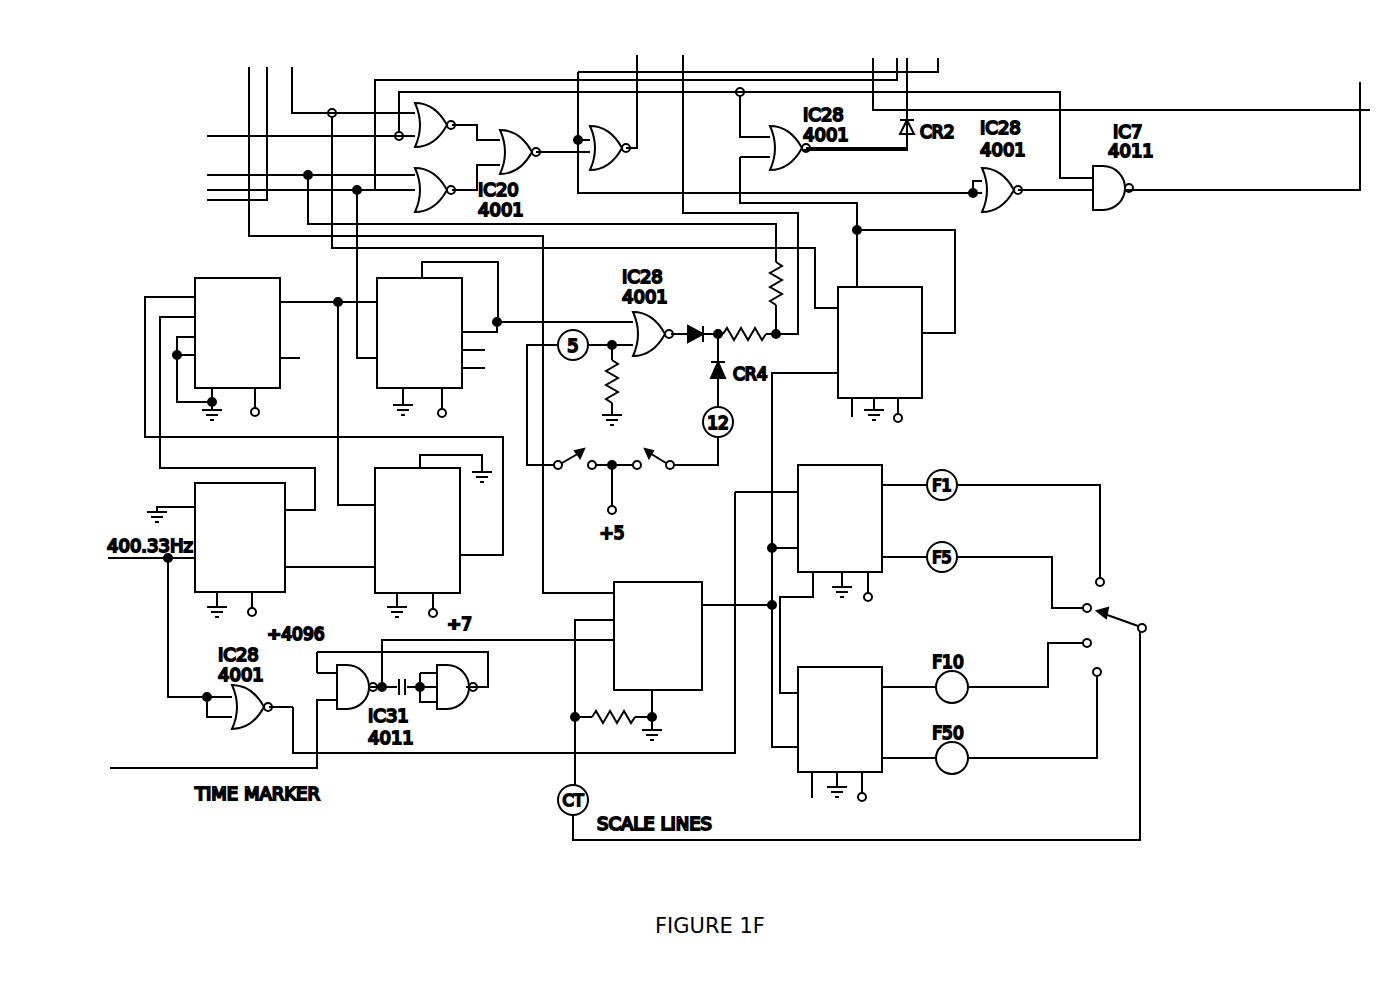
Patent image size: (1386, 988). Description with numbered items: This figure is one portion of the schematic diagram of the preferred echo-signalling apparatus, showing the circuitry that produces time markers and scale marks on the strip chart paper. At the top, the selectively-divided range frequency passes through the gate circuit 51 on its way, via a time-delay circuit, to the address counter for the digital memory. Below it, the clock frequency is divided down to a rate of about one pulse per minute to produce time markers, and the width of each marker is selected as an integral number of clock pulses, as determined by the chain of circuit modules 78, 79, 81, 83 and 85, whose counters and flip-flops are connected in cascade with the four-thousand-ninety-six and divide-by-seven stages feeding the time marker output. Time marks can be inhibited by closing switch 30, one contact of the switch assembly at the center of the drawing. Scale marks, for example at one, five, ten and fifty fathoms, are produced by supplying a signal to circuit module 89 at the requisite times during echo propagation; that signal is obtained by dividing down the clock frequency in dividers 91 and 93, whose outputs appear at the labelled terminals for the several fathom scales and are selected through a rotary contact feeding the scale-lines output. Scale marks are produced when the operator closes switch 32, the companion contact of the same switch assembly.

The gate circuit 51 is at (548, 125).
The circuit module 81 is at (274, 380).
The circuit module 79 is at (460, 388).
The circuit module 83 is at (277, 585).
The circuit module 85 is at (457, 588).
The circuit module 78 is at (920, 384).
The circuit module 89 is at (680, 583).
The divider 91 is at (873, 464).
The divider 93 is at (870, 668).
The switch 30 is at (587, 468).
The switch 32 is at (651, 468).